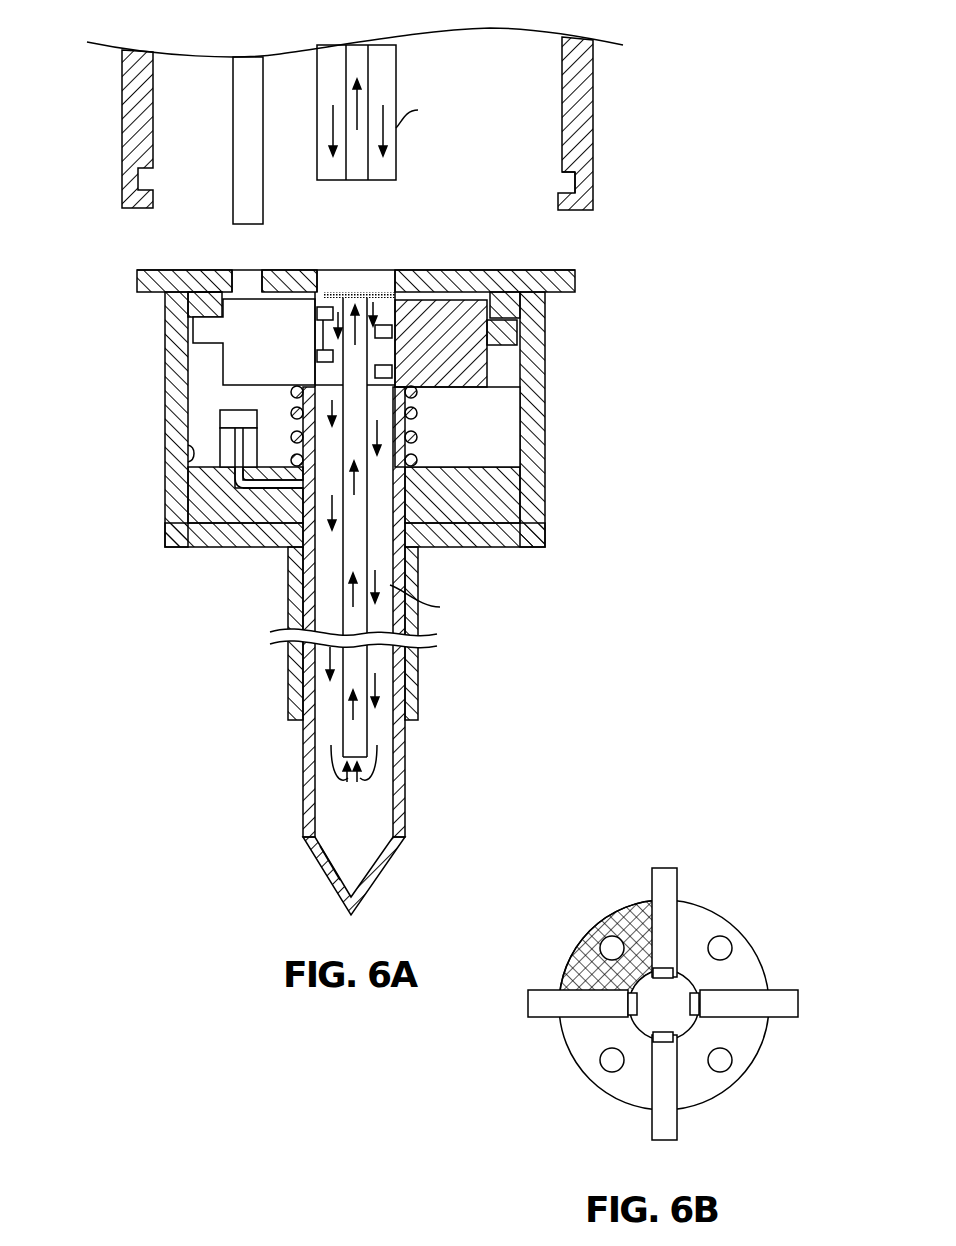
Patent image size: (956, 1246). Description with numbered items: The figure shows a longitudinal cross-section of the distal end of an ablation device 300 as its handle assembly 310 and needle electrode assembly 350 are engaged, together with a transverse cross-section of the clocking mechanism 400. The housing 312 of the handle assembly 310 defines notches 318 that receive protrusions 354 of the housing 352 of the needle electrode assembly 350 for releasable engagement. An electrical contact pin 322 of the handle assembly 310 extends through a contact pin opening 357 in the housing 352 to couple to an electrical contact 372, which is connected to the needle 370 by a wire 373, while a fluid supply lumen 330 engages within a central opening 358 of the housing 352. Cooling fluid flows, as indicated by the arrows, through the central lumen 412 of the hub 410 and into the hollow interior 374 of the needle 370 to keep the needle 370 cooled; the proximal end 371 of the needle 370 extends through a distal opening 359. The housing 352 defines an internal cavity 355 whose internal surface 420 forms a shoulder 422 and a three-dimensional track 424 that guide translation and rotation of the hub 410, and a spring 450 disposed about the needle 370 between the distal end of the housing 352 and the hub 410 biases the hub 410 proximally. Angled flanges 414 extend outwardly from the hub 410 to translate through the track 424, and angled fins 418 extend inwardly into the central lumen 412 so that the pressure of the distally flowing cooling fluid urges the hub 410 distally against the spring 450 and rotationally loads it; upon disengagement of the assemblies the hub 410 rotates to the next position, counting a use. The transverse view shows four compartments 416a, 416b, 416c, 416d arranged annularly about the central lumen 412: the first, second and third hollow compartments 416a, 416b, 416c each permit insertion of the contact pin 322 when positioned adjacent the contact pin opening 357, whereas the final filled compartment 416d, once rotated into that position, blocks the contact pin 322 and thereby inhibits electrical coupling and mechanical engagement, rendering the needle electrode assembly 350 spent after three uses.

In FIG. 6A, the ablation device 300 is at (728, 206).
In FIG. 6A, the handle assembly 310 is at (122, 110).
In FIG. 6A, the housing 312 is at (593, 97).
In FIG. 6A, the notches 318 is at (575, 180).
In FIG. 6A, the electrical contact pin 322 is at (233, 112).
In FIG. 6A, the fluid supply lumen 330 is at (317, 80).
In FIG. 6A, the needle electrode assembly 350 is at (397, 575).
In FIG. 6A, the housing 352 is at (530, 527).
In FIG. 6A, the protrusions 354 is at (575, 285).
In FIG. 6A, the internal cavity 355 is at (520, 392).
In FIG. 6A, the contact pin opening 357 is at (240, 270).
In FIG. 6A, the central opening 358 is at (385, 270).
In FIG. 6A, the distal opening 359 is at (418, 565).
In FIG. 6A, the needle 370 is at (405, 800).
In FIG. 6A, the proximal end 371 is at (291, 418).
In FIG. 6A, the electrical contact 372 is at (222, 421).
In FIG. 6A, the wire 373 is at (275, 488).
In FIG. 6A, the hollow interior 374 is at (357, 857).
In FIG. 6A, the clocking mechanism 400 is at (505, 421).
In FIG. 6A, the hub 410 is at (490, 368).
In FIG. 6B, the hub 410 is at (720, 920).
In FIG. 6A, the central lumen 412 is at (325, 376).
In FIG. 6B, the central lumen 412 is at (672, 993).
In FIG. 6A, the angled flanges 414 is at (502, 333).
In FIG. 6B, the angled flanges 414 is at (663, 868).
In FIG. 6B, the first hollow compartment 416a is at (695, 915).
In FIG. 6B, the second hollow compartment 416b is at (725, 1077).
In FIG. 6B, the third hollow compartment 416c is at (608, 1085).
In FIG. 6B, the filled compartment 416d is at (628, 915).
In FIG. 6A, the angled fins 418 is at (323, 305).
In FIG. 6B, the angled fins 418 is at (673, 972).
In FIG. 6A, the internal surface 420 is at (257, 444).
In FIG. 6A, the shoulder 422 is at (200, 305).
In FIG. 6A, the track 424 is at (194, 390).
In FIG. 6A, the spring 450 is at (240, 468).